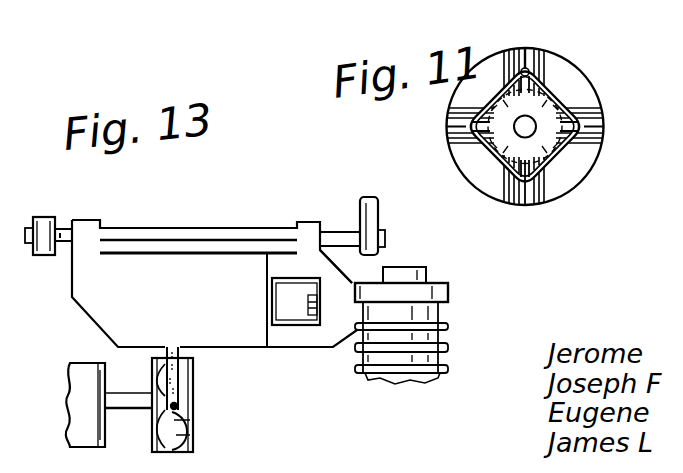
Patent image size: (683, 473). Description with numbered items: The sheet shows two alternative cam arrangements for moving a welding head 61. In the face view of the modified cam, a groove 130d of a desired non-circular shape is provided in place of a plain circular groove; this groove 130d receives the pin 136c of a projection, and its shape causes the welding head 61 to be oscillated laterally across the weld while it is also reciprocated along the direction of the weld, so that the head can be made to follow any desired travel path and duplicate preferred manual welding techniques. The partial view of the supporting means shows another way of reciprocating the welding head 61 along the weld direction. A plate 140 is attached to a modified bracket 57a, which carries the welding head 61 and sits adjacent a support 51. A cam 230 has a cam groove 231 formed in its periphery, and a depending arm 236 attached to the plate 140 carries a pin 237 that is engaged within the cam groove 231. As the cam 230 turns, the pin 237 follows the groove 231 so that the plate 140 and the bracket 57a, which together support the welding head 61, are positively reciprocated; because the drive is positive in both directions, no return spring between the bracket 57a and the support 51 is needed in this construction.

In FIG. 13, the plate 140 is at (224, 295).
In FIG. 13, the support 51 is at (372, 214).
In FIG. 13, the modified bracket 57a is at (345, 273).
In FIG. 13, the welding head 61 is at (452, 289).
In FIG. 13, the cam 230 is at (190, 437).
In FIG. 13, the depending arm 236 is at (183, 372).
In FIG. 13, the pin 237 is at (179, 404).
In FIG. 13, the cam groove 231 is at (186, 426).
In FIG. 11, the pin 136c is at (528, 68).
In FIG. 11, the groove 130d is at (567, 97).